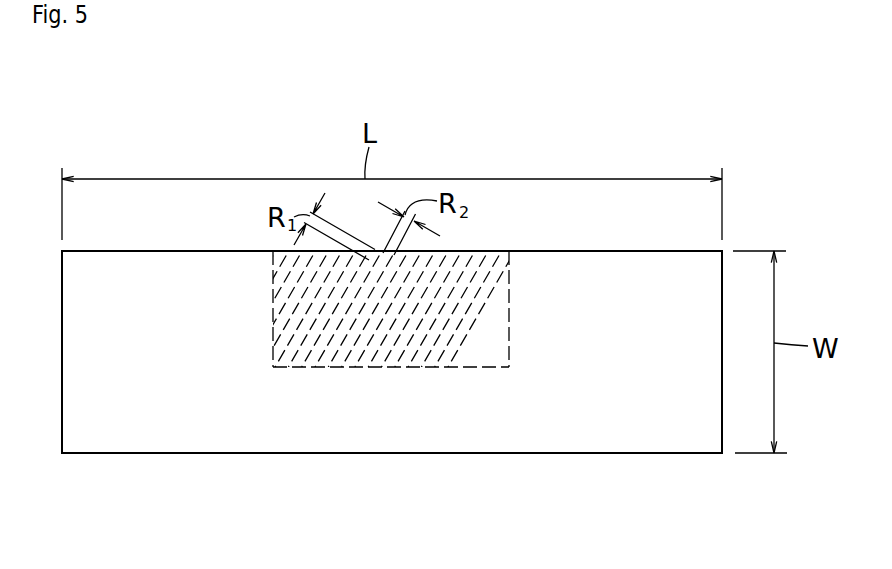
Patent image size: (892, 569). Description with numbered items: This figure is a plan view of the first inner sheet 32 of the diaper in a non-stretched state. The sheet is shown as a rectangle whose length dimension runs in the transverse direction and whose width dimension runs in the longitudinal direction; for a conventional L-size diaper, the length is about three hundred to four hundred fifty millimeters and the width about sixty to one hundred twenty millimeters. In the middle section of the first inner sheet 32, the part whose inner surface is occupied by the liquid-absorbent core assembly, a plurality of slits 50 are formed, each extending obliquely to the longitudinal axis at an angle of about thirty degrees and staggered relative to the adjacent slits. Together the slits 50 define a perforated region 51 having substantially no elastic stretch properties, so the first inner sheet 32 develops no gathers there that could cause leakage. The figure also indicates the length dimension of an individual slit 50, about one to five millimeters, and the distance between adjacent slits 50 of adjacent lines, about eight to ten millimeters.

The first inner sheet 32 is at (600, 456).
The slits 50 is at (296, 290).
The perforated region 51 is at (375, 371).